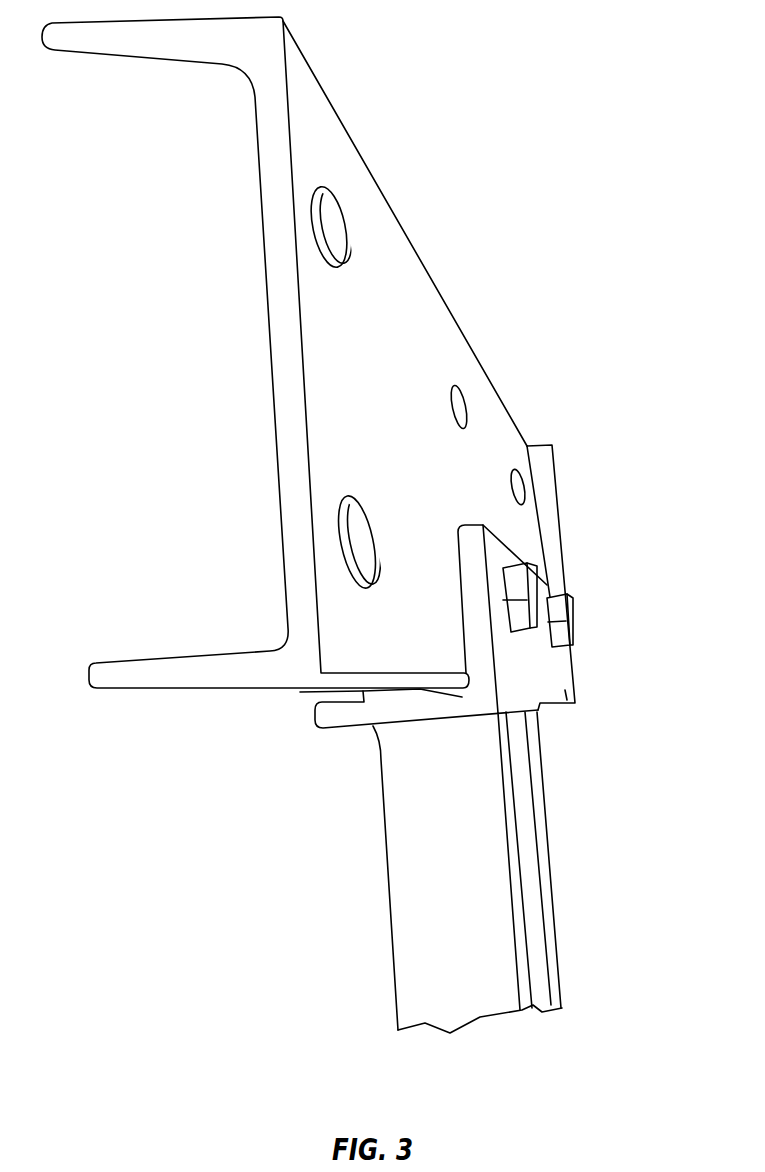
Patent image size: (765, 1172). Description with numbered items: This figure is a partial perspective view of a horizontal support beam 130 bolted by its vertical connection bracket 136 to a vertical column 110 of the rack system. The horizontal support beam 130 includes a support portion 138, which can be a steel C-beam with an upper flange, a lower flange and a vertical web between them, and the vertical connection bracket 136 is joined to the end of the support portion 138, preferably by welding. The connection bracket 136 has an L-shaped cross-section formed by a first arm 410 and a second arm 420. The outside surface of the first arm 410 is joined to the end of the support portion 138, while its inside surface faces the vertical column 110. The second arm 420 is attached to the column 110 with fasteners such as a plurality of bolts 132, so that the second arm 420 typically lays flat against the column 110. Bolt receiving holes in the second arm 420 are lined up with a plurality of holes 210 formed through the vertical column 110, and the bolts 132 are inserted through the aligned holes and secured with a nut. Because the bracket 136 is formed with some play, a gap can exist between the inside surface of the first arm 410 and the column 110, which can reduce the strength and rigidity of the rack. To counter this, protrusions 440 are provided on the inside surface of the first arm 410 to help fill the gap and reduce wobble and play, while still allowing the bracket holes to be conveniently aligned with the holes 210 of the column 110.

The vertical column 110 is at (278, 505).
The holes 210 is at (334, 210).
The horizontal support beam 130 is at (556, 768).
The bolts 132 is at (535, 585).
The vertical connection bracket 136 is at (495, 547).
The support portion 138 is at (527, 850).
The first arm 410 is at (418, 707).
The second arm 420 is at (473, 628).
The protrusions 440 is at (395, 688).